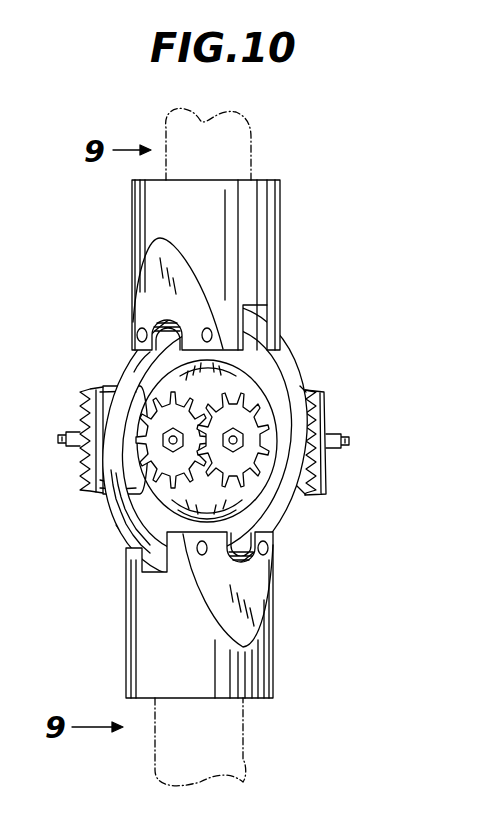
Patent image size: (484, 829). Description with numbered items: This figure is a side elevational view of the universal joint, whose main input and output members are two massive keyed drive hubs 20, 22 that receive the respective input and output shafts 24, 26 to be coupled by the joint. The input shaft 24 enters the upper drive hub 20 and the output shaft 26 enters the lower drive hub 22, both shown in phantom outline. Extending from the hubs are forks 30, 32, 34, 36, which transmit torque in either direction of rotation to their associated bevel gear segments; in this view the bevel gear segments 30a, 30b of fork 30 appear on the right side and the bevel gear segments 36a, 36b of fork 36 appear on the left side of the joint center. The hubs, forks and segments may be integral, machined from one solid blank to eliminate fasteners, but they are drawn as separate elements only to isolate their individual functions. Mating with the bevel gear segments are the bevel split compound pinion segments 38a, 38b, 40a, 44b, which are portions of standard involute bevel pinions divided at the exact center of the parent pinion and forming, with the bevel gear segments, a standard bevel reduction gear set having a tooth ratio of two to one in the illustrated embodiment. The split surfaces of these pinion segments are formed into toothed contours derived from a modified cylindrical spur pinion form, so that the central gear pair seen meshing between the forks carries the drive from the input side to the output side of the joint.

The drive hub 20 is at (155, 205).
The drive hub 22 is at (262, 672).
The input shaft 24 is at (256, 134).
The output shaft 26 is at (170, 740).
The fork 30 is at (282, 360).
The bevel gear segment 30a is at (305, 392).
The bevel gear segment 30b is at (302, 488).
The fork 32 is at (133, 358).
The fork 34 is at (268, 522).
The fork 36 is at (124, 516).
The bevel gear segment 36a is at (95, 488).
The bevel gear segment 36b is at (118, 520).
The bevel split compound pinion segment 38a is at (282, 505).
The bevel split compound pinion segment 38b is at (132, 540).
The bevel split compound pinion segment 40a is at (80, 410).
The bevel split compound pinion segment 44b is at (324, 420).